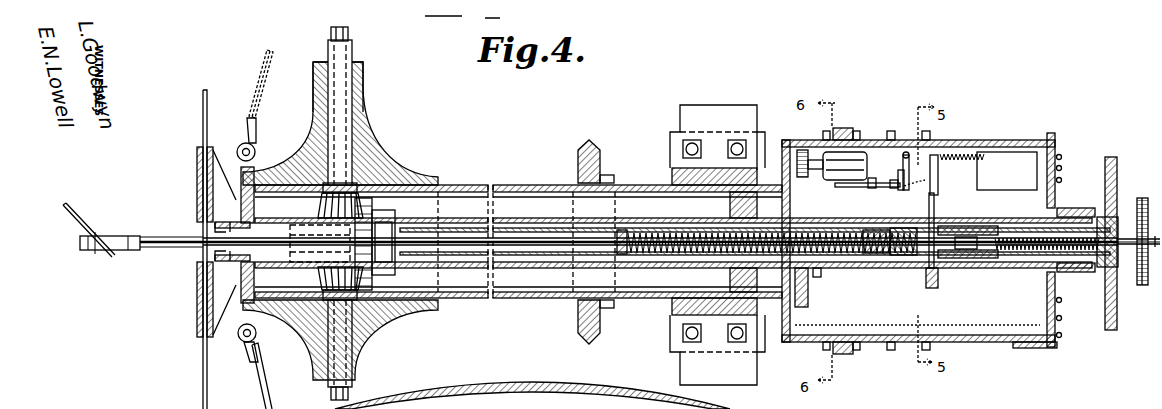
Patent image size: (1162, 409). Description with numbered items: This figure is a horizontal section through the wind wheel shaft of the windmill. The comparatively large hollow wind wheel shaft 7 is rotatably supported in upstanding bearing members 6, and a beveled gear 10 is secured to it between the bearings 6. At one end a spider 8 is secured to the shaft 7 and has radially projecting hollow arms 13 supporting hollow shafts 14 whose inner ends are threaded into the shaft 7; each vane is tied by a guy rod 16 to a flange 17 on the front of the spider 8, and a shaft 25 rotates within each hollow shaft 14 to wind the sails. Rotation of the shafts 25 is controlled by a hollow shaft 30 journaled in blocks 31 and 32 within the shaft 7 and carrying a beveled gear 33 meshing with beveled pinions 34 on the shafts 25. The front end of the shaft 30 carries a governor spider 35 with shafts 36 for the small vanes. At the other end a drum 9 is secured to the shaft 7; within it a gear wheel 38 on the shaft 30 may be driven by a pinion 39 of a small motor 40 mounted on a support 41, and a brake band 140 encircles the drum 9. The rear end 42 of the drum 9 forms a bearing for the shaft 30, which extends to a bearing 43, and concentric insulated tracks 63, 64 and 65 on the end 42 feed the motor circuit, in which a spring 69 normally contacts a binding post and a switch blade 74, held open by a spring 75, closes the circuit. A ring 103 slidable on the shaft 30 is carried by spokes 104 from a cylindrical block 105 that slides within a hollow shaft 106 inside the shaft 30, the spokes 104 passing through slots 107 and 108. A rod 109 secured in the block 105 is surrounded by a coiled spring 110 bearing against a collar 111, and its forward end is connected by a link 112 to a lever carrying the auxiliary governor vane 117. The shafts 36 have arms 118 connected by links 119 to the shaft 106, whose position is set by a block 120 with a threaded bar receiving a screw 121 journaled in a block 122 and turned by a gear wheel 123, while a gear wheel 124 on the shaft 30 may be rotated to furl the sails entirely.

The bearing members 6 is at (672, 172).
The wind wheel shaft 7 is at (552, 172).
The spider 8 is at (374, 138).
The drum 9 is at (985, 175).
The beveled gear 10 is at (590, 142).
The hollow arms 13 is at (365, 88).
The hollow shafts 14 is at (352, 55).
The guy rod 16 is at (263, 76).
The flange 17 is at (239, 148).
The shaft 25 is at (350, 33).
The hollow shaft 30 is at (455, 215).
The block 31 is at (256, 197).
The block 32 is at (730, 205).
The beveled gear 33 is at (375, 281).
The beveled pinions 34 is at (368, 340).
The spider 35 is at (197, 191).
The shafts 36 is at (203, 127).
The gear wheel 38 is at (808, 300).
The pinion 39 is at (802, 150).
The motor 40 is at (840, 155).
The support 41 is at (968, 154).
The rear end of the drum 42 is at (1047, 283).
The bearing 43 is at (1089, 215).
The insulated track 63 is at (1062, 300).
The insulated track 64 is at (1062, 318).
The insulated track 65 is at (1062, 336).
The spring 69 is at (860, 189).
The switch blade 74 is at (940, 200).
The spring 75 is at (938, 175).
The ring 103 is at (935, 289).
The spokes 104 is at (918, 250).
The cylindrical block 105 is at (970, 259).
The hollow shaft 106 is at (870, 253).
The longitudinal slot 107 is at (905, 256).
The longitudinal slot 108 is at (900, 190).
The rod 109 is at (516, 256).
The coiled spring 110 is at (688, 254).
The collar 111 is at (620, 254).
The link 112 is at (80, 243).
The vane 117 is at (63, 207).
The arms 118 is at (214, 225).
The links 119 is at (212, 246).
The block 120 is at (1037, 256).
The screw 121 is at (1100, 217).
The block 122 is at (1120, 250).
The gear wheel 123 is at (1142, 198).
The gear wheel 124 is at (1110, 157).
The brake band 140 is at (843, 354).